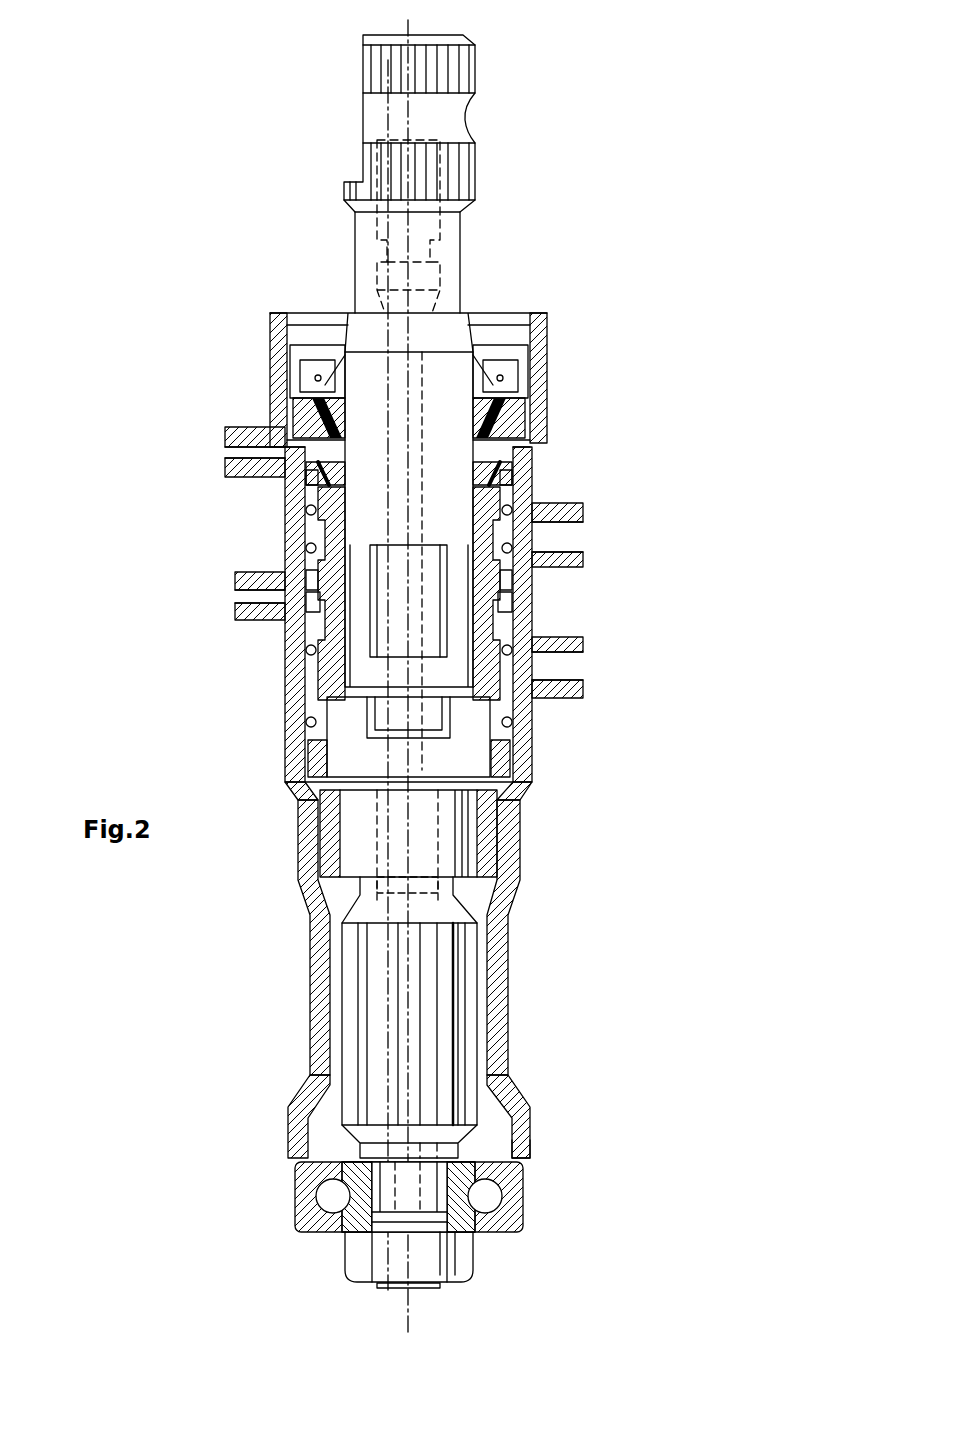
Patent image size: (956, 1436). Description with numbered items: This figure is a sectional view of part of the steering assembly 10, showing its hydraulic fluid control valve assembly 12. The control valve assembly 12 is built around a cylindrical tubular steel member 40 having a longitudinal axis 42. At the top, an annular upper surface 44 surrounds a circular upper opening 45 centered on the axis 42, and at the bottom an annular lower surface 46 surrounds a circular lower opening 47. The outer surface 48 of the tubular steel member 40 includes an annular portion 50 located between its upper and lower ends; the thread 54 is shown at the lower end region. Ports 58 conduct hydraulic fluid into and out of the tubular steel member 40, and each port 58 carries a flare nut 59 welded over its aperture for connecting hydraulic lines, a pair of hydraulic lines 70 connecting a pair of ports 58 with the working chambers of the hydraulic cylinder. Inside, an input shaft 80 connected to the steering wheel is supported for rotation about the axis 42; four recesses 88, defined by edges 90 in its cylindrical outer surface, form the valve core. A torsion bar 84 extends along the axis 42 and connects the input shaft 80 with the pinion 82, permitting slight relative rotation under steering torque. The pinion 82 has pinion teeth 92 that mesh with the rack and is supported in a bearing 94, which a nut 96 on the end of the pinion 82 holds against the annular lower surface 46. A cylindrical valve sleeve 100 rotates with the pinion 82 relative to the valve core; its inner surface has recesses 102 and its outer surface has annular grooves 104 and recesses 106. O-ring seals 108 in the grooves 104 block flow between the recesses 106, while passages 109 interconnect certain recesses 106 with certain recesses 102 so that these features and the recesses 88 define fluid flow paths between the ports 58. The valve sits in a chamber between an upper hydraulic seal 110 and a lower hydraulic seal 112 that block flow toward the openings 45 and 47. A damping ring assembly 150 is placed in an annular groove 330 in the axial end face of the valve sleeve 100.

The steering assembly 10 is at (212, 256).
The control valve assembly 12 is at (267, 377).
The cylindrical tubular steel member 40 is at (540, 385).
The longitudinal axis 42 is at (405, 22).
The annular upper surface 44 is at (530, 313).
The circular upper opening 45 is at (490, 302).
The annular lower surface 46 is at (523, 1163).
The circular lower opening 47 is at (320, 1155).
The outer surface 48 is at (518, 850).
The annular portion 50 is at (527, 792).
The thread 54 is at (530, 1150).
The ports 58 is at (225, 412).
The flare nut 59 is at (230, 428).
The hydraulic lines 70 is at (303, 547).
The input shaft 80 is at (388, 116).
The pinion 82 is at (355, 990).
The torsion bar 84 is at (385, 235).
The recesses 88 is at (387, 568).
The edges 90 is at (432, 567).
The pinion teeth 92 is at (385, 1025).
The bearing 94 is at (510, 1197).
The nut 96 is at (457, 1257).
The valve sleeve 100 is at (322, 672).
The recesses 102 is at (283, 575).
The annular grooves 104 is at (283, 475).
The recesses 106 is at (323, 510).
The O-ring seals 108 is at (307, 480).
The passages 109 is at (322, 598).
The upper hydraulic seal 110 is at (292, 420).
The lower hydraulic seal 112 is at (305, 763).
The damping ring assembly 150 is at (538, 455).
The annular groove 330 is at (524, 497).